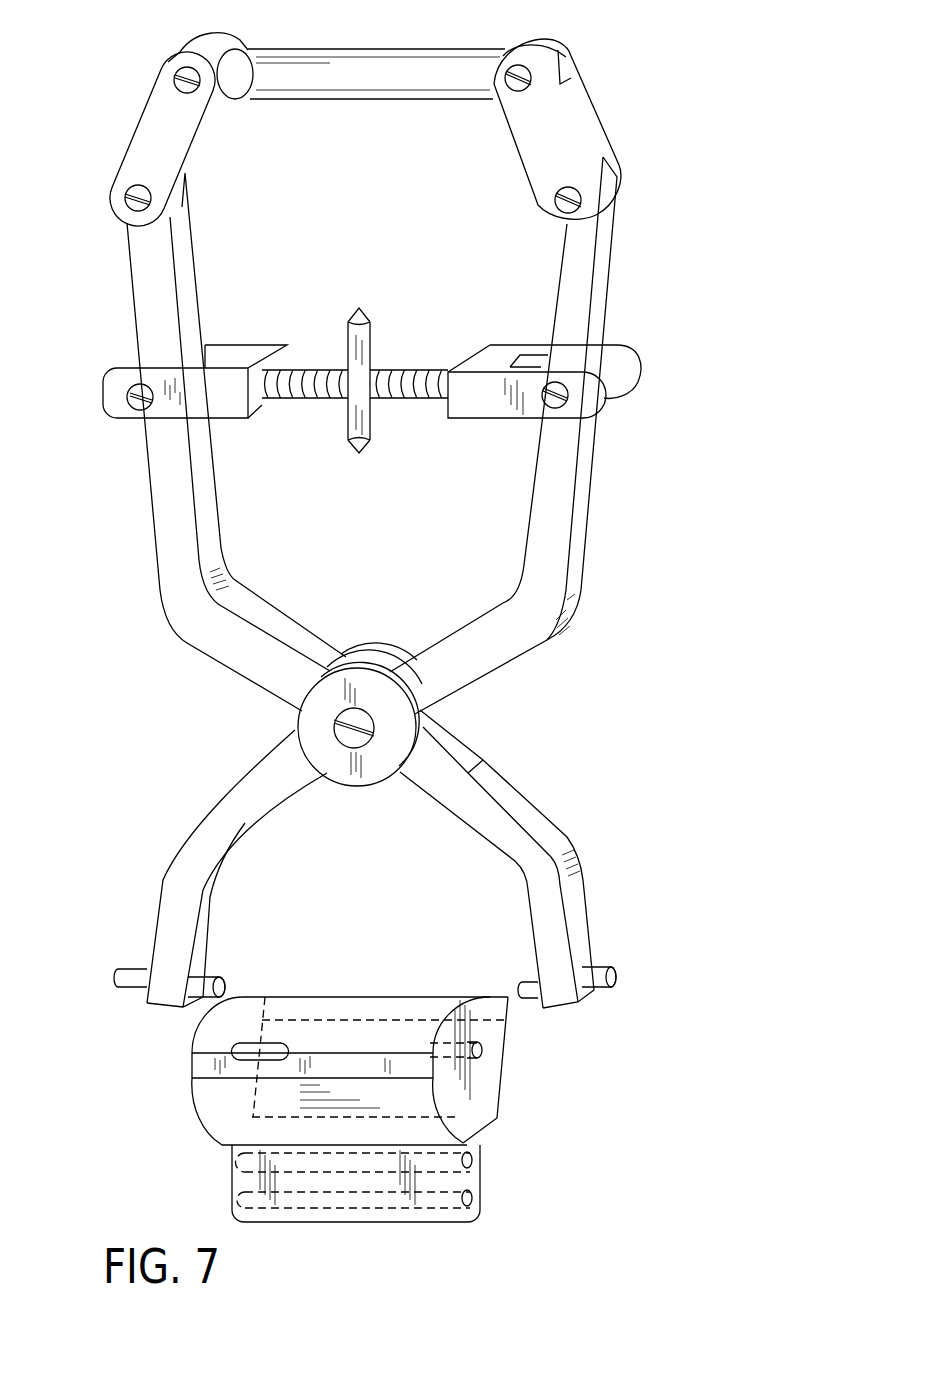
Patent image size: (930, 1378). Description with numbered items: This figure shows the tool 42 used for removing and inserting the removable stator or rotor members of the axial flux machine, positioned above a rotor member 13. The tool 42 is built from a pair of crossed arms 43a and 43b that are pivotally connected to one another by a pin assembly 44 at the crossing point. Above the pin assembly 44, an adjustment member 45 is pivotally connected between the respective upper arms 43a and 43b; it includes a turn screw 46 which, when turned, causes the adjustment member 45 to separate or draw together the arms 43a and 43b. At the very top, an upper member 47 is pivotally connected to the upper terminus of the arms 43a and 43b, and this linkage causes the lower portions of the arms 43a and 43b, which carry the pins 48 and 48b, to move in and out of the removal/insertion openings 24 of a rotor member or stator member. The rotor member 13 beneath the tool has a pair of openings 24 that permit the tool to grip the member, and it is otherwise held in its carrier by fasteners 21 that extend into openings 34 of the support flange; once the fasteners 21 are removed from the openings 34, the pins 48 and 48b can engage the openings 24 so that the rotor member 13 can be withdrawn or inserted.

The rotor member 13 is at (387, 1071).
The fasteners 21 is at (477, 1198).
The openings 24 is at (483, 1050).
The openings 34 is at (397, 1212).
The tool 42 is at (374, 582).
The arm 43a is at (582, 315).
The arm 43b is at (148, 332).
The pin assembly 44 is at (368, 772).
The adjustment member 45 is at (372, 378).
The turn screw 46 is at (347, 400).
The upper member 47 is at (378, 37).
The pin 48 is at (602, 968).
The pin 48b is at (215, 978).